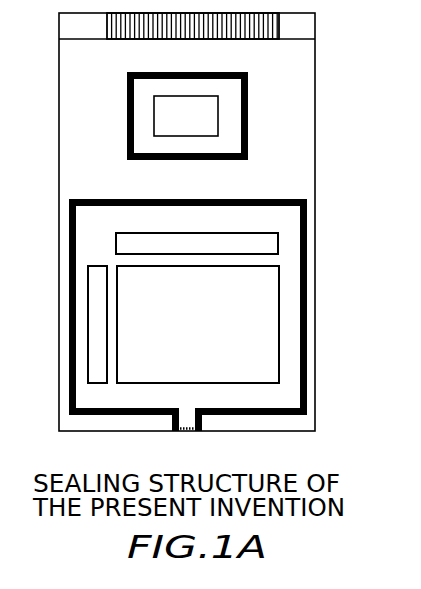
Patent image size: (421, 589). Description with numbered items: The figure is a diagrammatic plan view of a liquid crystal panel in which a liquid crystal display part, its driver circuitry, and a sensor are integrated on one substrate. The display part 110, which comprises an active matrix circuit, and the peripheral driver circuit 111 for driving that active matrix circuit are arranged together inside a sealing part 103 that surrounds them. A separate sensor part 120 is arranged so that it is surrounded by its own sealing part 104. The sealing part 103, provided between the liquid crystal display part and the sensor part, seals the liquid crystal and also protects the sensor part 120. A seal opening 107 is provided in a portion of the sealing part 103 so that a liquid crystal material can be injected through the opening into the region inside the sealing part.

The sealing part 103 is at (272, 199).
The sealing part 104 is at (248, 132).
The seal opening 107 is at (185, 433).
The display part 110 is at (252, 318).
The peripheral driver circuit 111 is at (120, 243).
The sensor part 120 is at (203, 110).